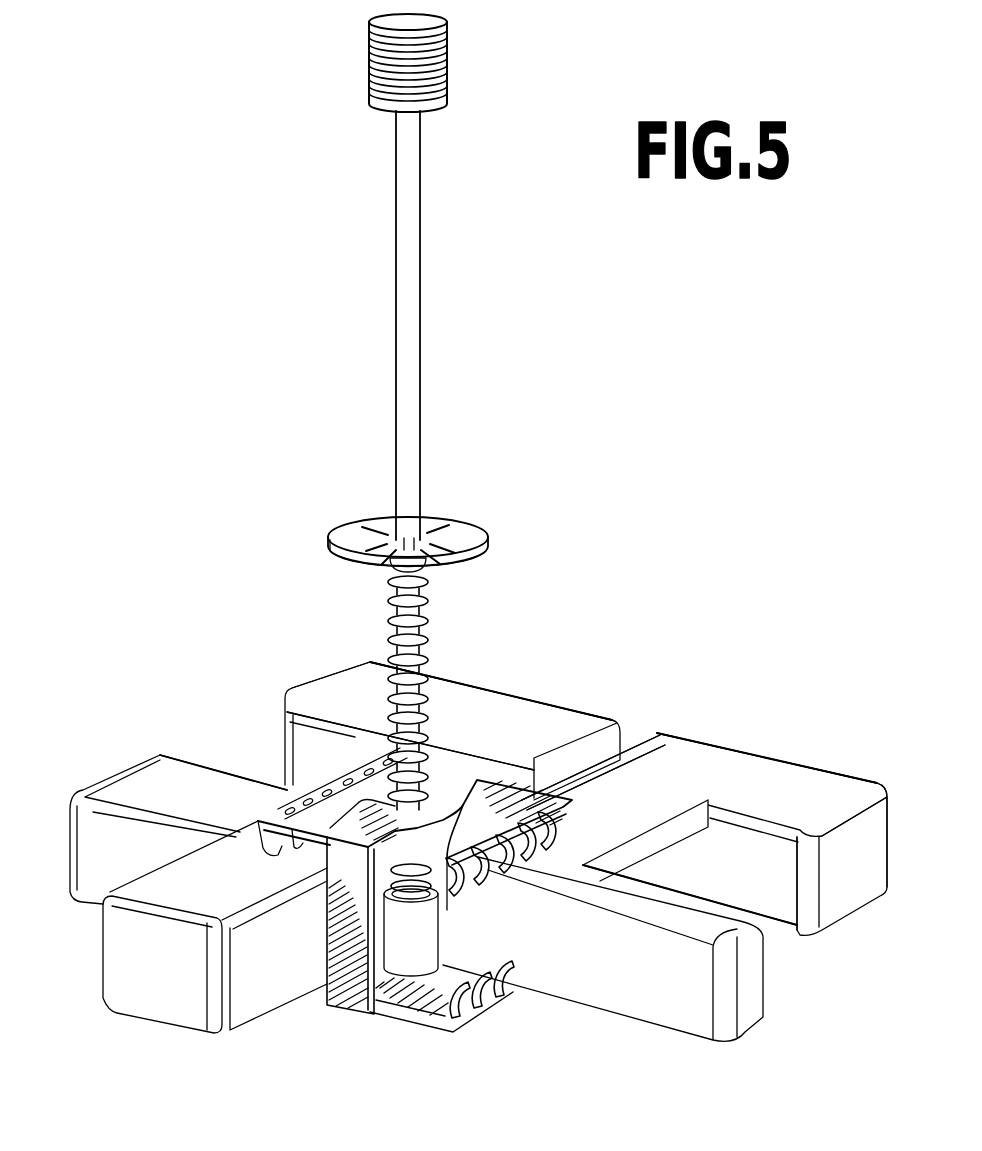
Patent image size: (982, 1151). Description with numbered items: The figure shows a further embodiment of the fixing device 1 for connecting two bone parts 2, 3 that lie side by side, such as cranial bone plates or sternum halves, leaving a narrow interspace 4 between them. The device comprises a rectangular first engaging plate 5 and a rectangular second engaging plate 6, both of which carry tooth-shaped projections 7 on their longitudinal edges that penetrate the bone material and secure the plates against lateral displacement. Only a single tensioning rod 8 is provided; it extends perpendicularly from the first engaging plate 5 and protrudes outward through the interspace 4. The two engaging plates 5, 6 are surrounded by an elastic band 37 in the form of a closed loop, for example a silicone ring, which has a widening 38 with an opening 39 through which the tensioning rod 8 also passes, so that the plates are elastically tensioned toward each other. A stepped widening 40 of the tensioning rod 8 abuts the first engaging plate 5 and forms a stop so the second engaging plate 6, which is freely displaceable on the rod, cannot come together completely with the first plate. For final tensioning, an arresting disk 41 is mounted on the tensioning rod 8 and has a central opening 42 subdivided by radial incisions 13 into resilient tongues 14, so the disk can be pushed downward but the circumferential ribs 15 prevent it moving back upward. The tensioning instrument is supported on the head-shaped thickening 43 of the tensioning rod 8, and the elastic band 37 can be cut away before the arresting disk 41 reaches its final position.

The fixing device 1 is at (460, 745).
The bone part 2 is at (557, 719).
The bone part 3 is at (719, 750).
The interspace 4 is at (635, 748).
The first engaging plate 5 is at (406, 1004).
The second engaging plate 6 is at (502, 803).
The tooth-shaped projections 7 is at (433, 1018).
The tensioning rod 8 is at (410, 277).
The radial incisions 13 is at (446, 538).
The resilient tongues 14 is at (388, 531).
The circumferential ribs 15 is at (388, 638).
The elastic band 37 is at (342, 945).
The widening 38 is at (465, 870).
The opening 39 is at (381, 792).
The stepped widening 40 is at (392, 884).
The arresting disk 41 is at (488, 536).
The central opening 42 is at (415, 538).
The head-shaped thickening 43 is at (442, 82).